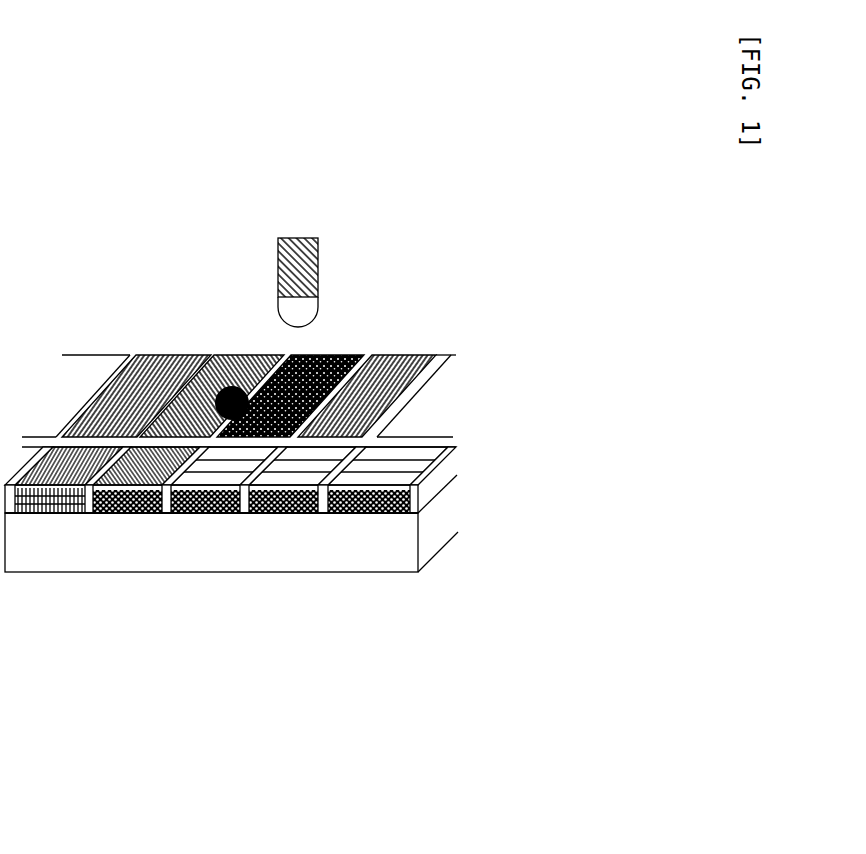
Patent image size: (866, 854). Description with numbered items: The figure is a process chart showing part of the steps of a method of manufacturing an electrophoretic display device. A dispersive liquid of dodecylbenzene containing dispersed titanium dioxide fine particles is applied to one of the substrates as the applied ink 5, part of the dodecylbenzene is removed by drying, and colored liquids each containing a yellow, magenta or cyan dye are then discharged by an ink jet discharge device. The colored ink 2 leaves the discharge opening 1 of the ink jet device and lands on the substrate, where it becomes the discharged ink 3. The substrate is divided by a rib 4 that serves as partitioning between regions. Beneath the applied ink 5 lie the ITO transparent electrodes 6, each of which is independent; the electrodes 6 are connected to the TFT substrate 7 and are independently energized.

The discharge opening 1 is at (296, 256).
The colored ink 2 is at (298, 315).
The discharged ink 3 is at (400, 373).
The rib 4 is at (365, 448).
The applied ink 5 is at (393, 492).
The ITO transparent electrode 6 is at (393, 513).
The TFT substrate 7 is at (358, 542).